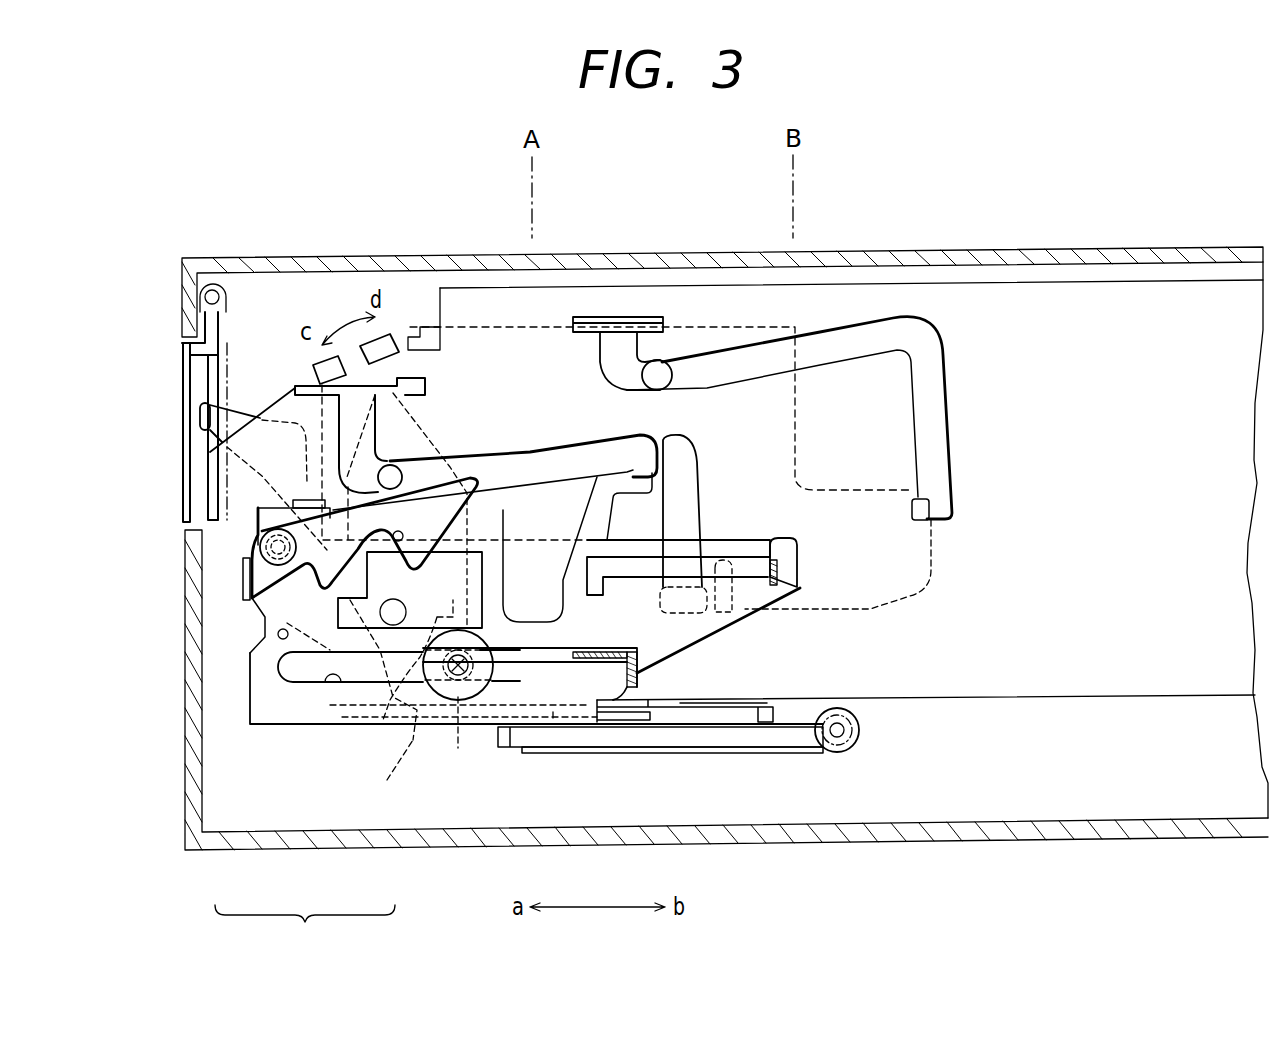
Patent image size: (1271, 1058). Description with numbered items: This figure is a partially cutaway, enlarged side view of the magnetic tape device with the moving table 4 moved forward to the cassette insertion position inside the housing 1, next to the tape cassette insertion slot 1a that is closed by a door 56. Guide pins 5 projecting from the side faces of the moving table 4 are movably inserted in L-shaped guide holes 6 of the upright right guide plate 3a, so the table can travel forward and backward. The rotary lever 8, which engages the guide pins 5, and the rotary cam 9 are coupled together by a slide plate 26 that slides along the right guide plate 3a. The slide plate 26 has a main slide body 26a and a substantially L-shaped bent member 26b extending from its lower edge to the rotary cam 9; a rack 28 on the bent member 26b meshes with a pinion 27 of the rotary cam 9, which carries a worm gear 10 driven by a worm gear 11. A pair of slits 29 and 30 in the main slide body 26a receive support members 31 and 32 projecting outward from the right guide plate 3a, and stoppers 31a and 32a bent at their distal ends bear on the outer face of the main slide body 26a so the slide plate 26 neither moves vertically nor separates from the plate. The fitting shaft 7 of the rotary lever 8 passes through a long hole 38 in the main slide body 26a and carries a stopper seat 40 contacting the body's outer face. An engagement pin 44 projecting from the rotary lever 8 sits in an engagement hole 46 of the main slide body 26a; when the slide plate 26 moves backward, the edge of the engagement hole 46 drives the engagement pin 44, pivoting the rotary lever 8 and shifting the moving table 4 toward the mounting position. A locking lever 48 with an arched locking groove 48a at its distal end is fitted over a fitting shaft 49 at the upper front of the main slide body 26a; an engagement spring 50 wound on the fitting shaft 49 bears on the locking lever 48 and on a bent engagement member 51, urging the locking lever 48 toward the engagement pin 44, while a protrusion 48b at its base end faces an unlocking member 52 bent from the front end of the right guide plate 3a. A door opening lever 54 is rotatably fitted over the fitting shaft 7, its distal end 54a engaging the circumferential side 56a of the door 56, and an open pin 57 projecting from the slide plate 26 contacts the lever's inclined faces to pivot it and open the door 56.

The housing 1 is at (1168, 247).
The tape cassette insertion slot 1a is at (194, 344).
The right guide plate 3a is at (1067, 660).
The moving table 4 is at (500, 338).
The guide pins 5 is at (398, 466).
The L-shaped guide holes 6 is at (562, 453).
The fitting shaft 7 is at (442, 689).
The rotary lever 8 is at (313, 360).
The rotary cam 9 is at (777, 763).
The worm gear 10 is at (823, 740).
The worm gear 11 is at (862, 730).
The slide plate 26 is at (305, 928).
The main slide body 26a is at (267, 697).
The bent member 26b is at (387, 780).
The pinion 27 is at (723, 712).
The rack 28 is at (660, 718).
The slit 29 is at (710, 560).
The slit 30 is at (548, 648).
The support member 31 is at (772, 548).
The stopper 31a is at (777, 597).
The support member 32 is at (620, 650).
The stopper 32a is at (637, 690).
The long hole 38 is at (330, 682).
The stopper seat 40 is at (492, 675).
The engagement pin 44 is at (405, 605).
The engagement hole 46 is at (483, 570).
The locking lever 48 is at (440, 488).
The locking groove 48a is at (410, 533).
The protrusion 48b is at (262, 617).
The fitting shaft 49 is at (258, 538).
The engagement spring 50 is at (283, 513).
The engagement member 51 is at (310, 500).
The unlocking member 52 is at (245, 585).
The door opening lever 54 is at (242, 414).
The distal end 54a is at (200, 418).
The door 56 is at (186, 386).
The circumferential side 56a is at (224, 340).
The open pin 57 is at (280, 639).